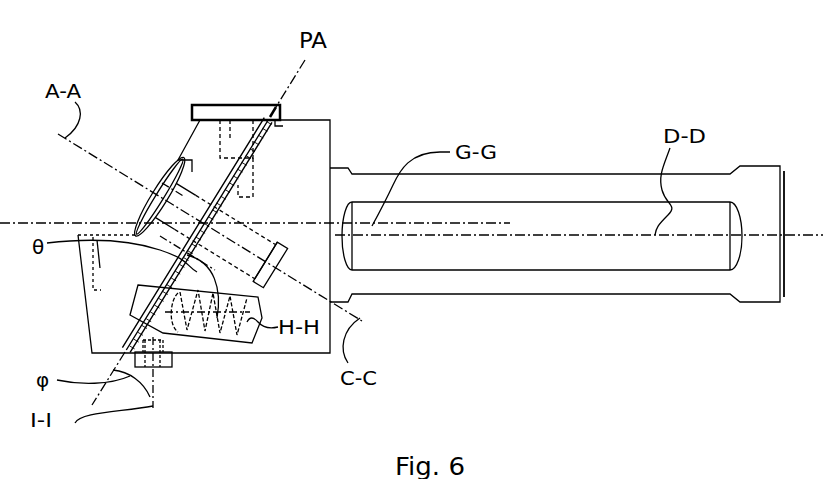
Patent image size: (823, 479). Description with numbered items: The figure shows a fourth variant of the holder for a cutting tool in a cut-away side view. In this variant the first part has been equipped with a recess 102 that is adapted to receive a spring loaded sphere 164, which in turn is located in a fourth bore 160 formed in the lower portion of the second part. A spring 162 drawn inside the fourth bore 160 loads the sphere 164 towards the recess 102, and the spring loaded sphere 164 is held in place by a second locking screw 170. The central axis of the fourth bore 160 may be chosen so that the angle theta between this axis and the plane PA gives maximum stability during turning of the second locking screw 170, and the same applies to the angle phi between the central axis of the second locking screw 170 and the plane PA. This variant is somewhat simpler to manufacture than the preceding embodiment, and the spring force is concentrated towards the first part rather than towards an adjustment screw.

The recess 102 is at (137, 293).
The fourth bore 160 is at (227, 343).
The spring 162 is at (197, 328).
The spring loaded sphere 164 is at (150, 312).
The second locking screw 170 is at (163, 368).